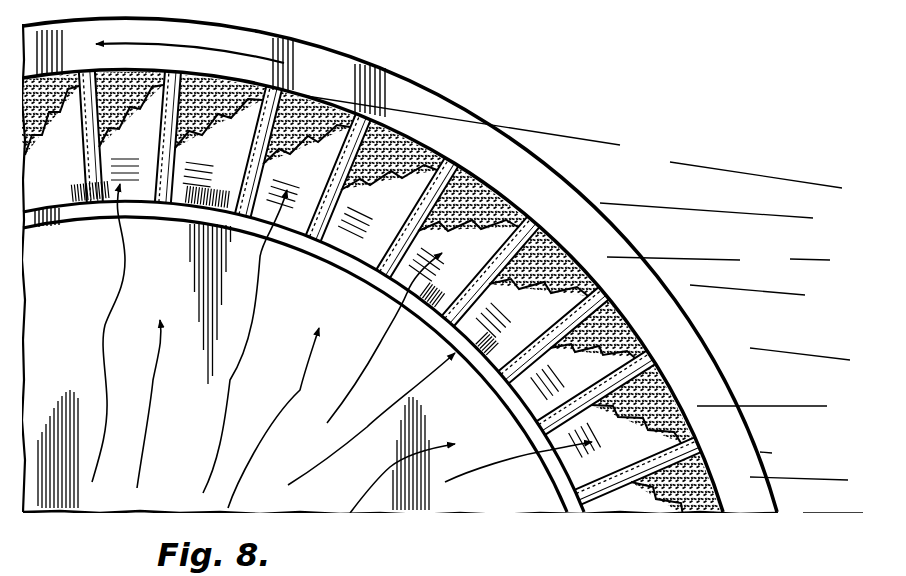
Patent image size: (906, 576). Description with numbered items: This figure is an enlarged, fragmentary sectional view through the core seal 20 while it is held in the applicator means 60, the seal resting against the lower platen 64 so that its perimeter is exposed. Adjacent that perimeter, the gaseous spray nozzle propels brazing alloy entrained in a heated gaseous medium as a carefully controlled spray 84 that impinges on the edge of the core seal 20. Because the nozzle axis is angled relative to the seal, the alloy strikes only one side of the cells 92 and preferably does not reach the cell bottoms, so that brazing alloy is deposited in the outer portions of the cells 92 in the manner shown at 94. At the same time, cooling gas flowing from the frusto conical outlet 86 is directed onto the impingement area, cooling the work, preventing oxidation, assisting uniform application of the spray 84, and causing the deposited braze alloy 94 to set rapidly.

The core seal 20 is at (518, 407).
The applicator means 60 is at (633, 523).
The lower platen 64 is at (325, 62).
The spray 84 is at (625, 172).
The frusto conical outlet 86 is at (155, 497).
The cells 92 is at (367, 247).
The deposited brazing alloy 94 is at (400, 133).